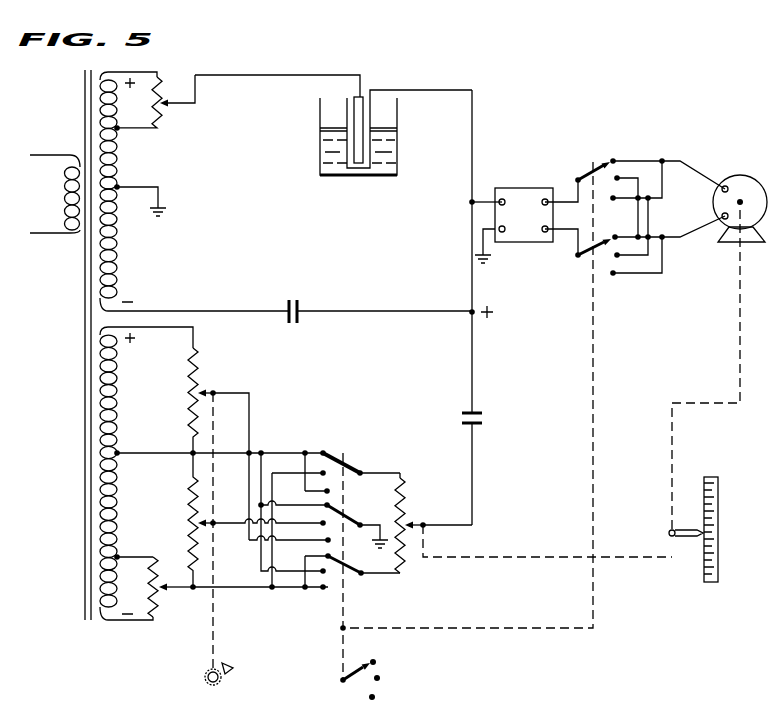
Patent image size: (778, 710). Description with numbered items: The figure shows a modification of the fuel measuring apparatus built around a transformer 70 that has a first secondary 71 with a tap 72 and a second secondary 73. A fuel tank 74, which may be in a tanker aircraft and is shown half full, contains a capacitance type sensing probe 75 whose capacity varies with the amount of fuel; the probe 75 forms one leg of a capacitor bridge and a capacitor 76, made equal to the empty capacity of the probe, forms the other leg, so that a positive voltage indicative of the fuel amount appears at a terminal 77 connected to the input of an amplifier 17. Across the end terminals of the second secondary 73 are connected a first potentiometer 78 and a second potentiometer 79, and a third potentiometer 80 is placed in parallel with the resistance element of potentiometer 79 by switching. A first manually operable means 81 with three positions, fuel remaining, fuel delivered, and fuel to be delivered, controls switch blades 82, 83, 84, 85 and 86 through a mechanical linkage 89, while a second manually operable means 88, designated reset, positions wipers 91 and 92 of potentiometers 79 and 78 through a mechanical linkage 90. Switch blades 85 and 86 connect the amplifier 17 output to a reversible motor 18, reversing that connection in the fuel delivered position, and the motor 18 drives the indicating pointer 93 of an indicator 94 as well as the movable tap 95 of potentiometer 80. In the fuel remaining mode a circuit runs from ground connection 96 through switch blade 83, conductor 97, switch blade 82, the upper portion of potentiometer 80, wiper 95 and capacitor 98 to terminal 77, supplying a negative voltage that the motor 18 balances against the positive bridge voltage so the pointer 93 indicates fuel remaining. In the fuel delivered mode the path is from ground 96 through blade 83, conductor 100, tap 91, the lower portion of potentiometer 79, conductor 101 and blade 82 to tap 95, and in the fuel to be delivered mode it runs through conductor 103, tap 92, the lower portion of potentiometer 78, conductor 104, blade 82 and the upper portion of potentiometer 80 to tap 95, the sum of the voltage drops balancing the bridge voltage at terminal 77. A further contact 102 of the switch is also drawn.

The amplifier 17 is at (520, 188).
The motor 18 is at (738, 176).
The transformer 70 is at (67, 136).
The first secondary 71 is at (118, 164).
The tap 72 is at (118, 190).
The second secondary 73 is at (117, 416).
The fuel tank 74 is at (320, 136).
The capacitance type sensing probe 75 is at (367, 80).
The capacitor 76 is at (297, 309).
The terminal 77 is at (471, 310).
The first potentiometer 78 is at (180, 389).
The second potentiometer 79 is at (179, 516).
The third potentiometer 80 is at (414, 501).
The first manually operable means 81 is at (343, 684).
The switch blade 82 is at (348, 466).
The switch blade 83 is at (348, 516).
The switch blade 84 is at (359, 574).
The switch blade 85 is at (580, 175).
The switch blade 86 is at (580, 258).
The second manually operable means 88 is at (220, 686).
The mechanical linkage 89 is at (341, 659).
The mechanical linkage 90 is at (215, 637).
The potentiometer wiper 91 is at (214, 521).
The potentiometer wiper 92 is at (213, 390).
The indicating pointer 93 is at (688, 530).
The indicator 94 is at (687, 567).
The movable tap 95 is at (418, 522).
The ground connection 96 is at (380, 540).
The conductor 97 is at (260, 490).
The capacitor 98 is at (482, 413).
The conductor 100 is at (235, 526).
The conductor 101 is at (247, 589).
The contact 102 is at (283, 474).
The conductor 103 is at (302, 556).
The conductor 104 is at (293, 445).